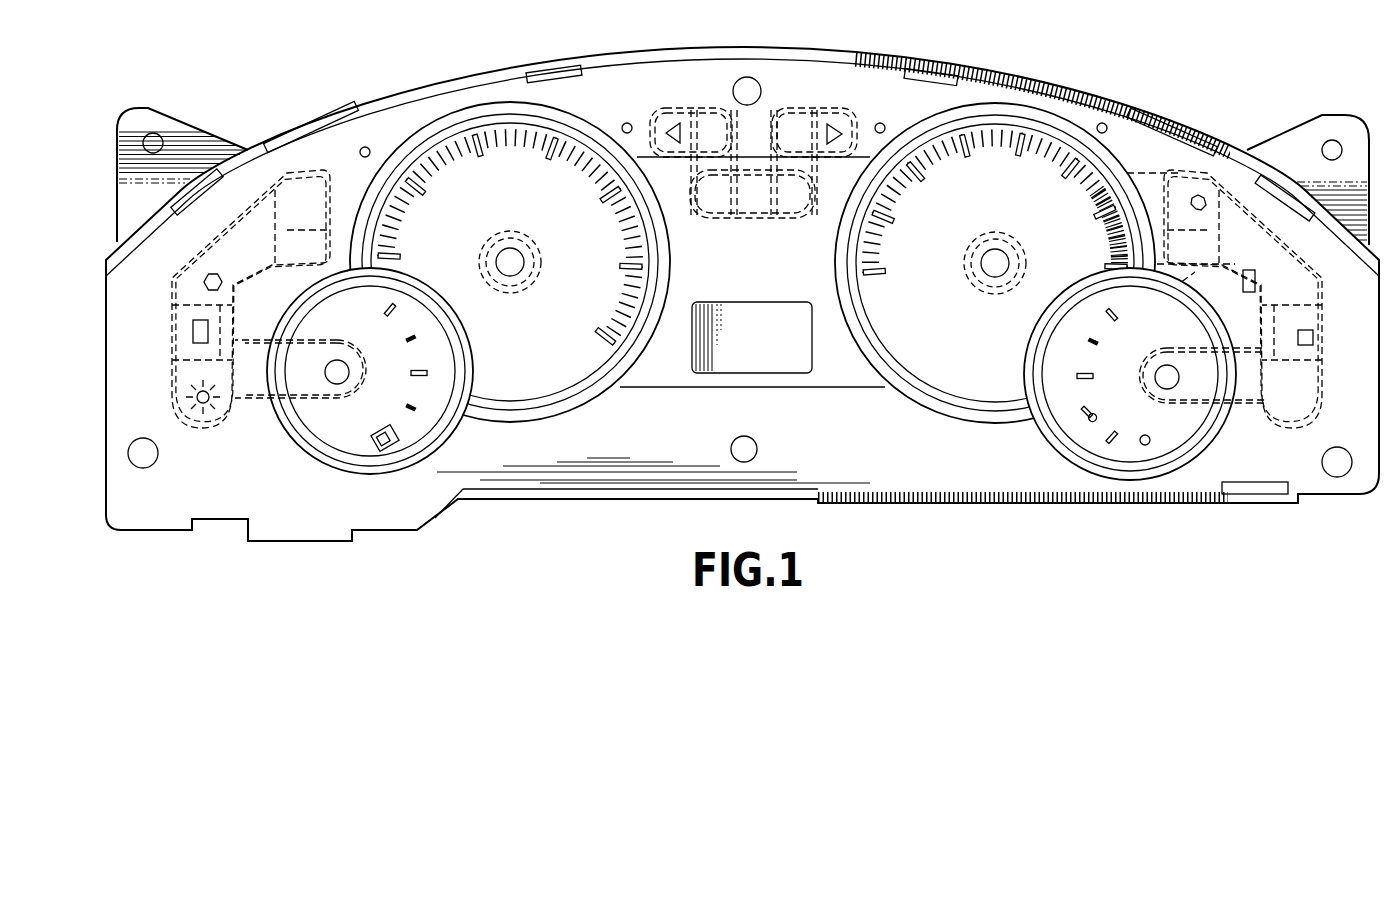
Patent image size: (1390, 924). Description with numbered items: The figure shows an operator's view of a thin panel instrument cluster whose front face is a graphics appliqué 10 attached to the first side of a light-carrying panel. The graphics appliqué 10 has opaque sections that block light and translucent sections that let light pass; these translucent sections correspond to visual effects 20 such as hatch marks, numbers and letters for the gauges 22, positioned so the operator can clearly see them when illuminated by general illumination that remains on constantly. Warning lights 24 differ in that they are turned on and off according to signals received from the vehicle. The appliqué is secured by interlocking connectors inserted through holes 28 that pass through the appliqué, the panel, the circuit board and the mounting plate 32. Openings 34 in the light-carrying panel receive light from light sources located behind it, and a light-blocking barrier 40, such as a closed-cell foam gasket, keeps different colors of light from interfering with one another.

The graphics appliqué 10 is at (389, 122).
The visual effects 20 is at (458, 204).
The gauges 22 is at (545, 373).
The warning lights 24 is at (190, 331).
The holes 28 is at (144, 458).
The mounting plate 32 is at (172, 130).
The openings 34 is at (627, 122).
The light-blocking barrier 40 is at (289, 165).